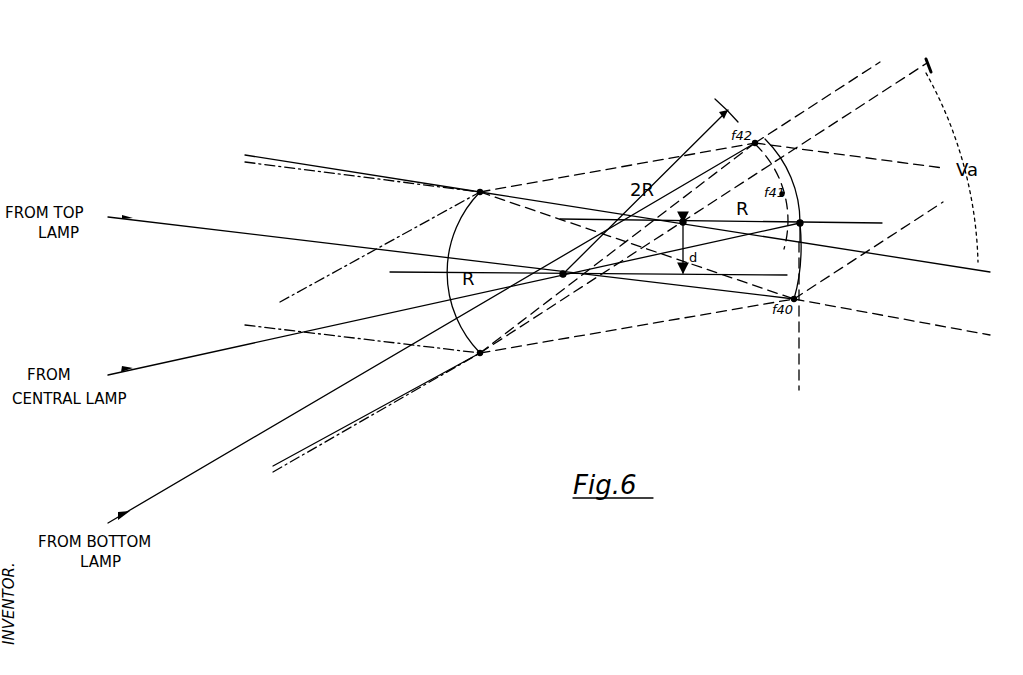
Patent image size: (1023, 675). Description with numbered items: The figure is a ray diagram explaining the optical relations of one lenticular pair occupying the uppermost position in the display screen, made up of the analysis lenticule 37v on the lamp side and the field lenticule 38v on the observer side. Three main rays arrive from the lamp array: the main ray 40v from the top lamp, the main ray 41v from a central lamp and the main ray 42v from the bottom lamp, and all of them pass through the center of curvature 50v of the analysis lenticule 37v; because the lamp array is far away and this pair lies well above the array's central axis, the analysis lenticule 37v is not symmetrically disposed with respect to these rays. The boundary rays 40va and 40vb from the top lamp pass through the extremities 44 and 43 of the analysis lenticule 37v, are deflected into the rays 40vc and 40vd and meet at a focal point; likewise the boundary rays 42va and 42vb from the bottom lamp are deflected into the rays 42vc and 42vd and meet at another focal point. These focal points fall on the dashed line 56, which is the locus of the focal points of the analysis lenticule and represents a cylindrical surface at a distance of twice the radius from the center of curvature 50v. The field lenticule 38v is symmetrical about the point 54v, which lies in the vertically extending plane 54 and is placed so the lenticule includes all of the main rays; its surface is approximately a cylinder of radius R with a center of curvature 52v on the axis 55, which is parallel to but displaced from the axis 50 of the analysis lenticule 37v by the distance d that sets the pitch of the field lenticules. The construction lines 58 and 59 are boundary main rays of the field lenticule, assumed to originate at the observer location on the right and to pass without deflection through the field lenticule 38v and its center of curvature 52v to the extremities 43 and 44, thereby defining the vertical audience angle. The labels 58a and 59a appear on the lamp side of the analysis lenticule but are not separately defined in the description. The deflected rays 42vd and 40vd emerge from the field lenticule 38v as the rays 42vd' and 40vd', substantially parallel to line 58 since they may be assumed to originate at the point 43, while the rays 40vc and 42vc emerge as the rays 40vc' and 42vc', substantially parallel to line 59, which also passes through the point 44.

The analysis lenticule 37v is at (450, 250).
The field lenticule 38v is at (772, 138).
The main ray from top lamp 40v is at (262, 235).
The boundary ray from top lamp 40va is at (352, 175).
The boundary ray from top lamp 40vb is at (410, 344).
The deflected ray 40vc is at (637, 245).
The deflected ray 40vd is at (637, 326).
The emergent ray 40vc' is at (892, 317).
The emergent ray 40vd' is at (868, 241).
The main ray from central lamp 41v is at (165, 362).
The main ray from bottom lamp 42v is at (203, 468).
The boundary ray from bottom lamp 42va is at (376, 249).
The boundary ray from bottom lamp 42vb is at (369, 430).
The deflected ray 42vc is at (617, 166).
The deflected ray 42vd is at (617, 248).
The emergent ray 42vc' is at (849, 151).
The emergent ray 42vd' is at (817, 102).
The lower extremity of analysis lenticule 43 is at (481, 356).
The upper extremity of analysis lenticule 44 is at (481, 190).
The axis of analysis lenticule 50 is at (430, 276).
The center of curvature of analysis lenticule 50v is at (567, 280).
The center of curvature of field lenticule 52v is at (683, 222).
The plane 54 is at (803, 346).
The symmetry point of field lenticule 54v is at (803, 220).
The axis of field lenticule 55 is at (858, 224).
The locus of focal points 56 is at (736, 113).
The construction line 58 is at (905, 78).
The incident boundary line 58a is at (373, 416).
The construction line 59 is at (735, 232).
The incident boundary line 59a is at (348, 170).